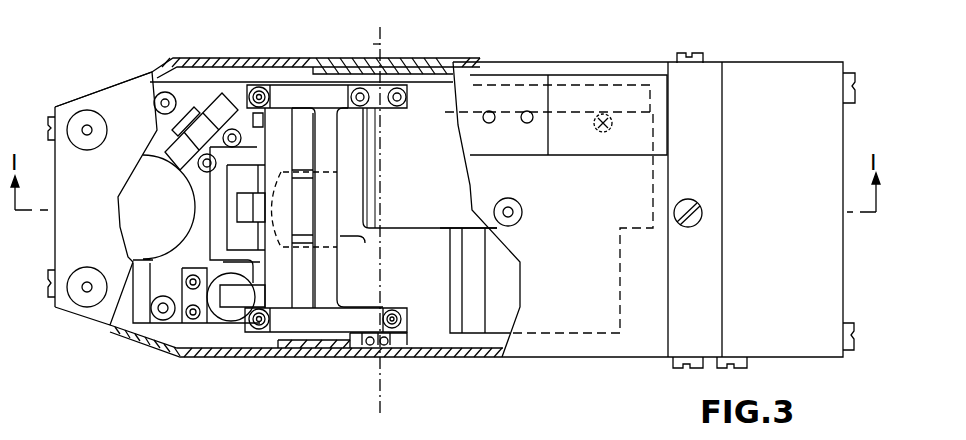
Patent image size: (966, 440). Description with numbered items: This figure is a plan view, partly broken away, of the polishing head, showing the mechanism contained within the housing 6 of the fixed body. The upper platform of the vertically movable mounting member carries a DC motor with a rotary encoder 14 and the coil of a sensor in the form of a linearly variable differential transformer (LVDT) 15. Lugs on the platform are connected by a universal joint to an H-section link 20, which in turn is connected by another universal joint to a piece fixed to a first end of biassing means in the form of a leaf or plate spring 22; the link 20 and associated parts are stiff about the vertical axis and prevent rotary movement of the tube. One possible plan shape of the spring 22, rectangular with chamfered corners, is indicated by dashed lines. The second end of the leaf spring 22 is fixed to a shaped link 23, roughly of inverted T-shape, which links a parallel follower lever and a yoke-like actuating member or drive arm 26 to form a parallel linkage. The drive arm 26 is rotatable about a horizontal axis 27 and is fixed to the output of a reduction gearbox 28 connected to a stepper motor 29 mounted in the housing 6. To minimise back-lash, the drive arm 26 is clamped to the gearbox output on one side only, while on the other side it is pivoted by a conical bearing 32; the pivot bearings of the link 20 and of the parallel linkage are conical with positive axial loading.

The housing 6 is at (123, 336).
The rotary encoder 14 is at (133, 221).
The linearly variable differential transformer (LVDT) 15 is at (220, 317).
The H-section link 20 is at (232, 208).
The leaf or plate spring 22 is at (355, 240).
The shaped link 23 is at (282, 123).
The drive arm 26 is at (278, 325).
The horizontal axis 27 is at (378, 46).
The reduction gearbox 28 is at (423, 218).
The stepper motor 29 is at (596, 333).
The conical bearing 32 is at (360, 358).